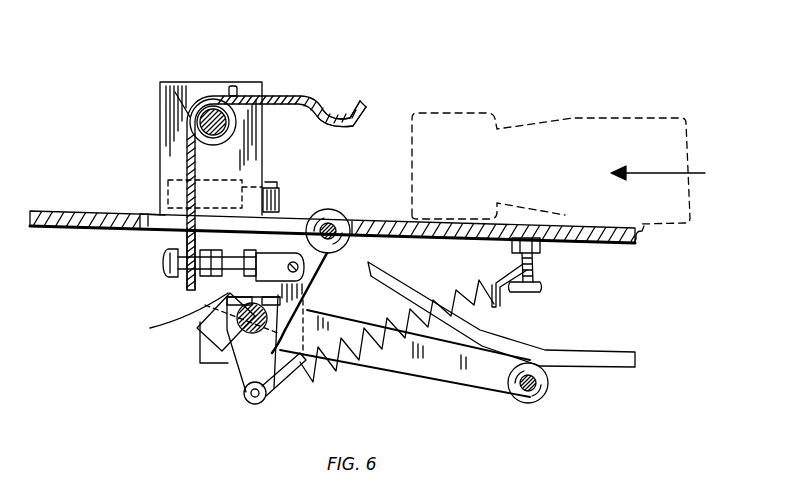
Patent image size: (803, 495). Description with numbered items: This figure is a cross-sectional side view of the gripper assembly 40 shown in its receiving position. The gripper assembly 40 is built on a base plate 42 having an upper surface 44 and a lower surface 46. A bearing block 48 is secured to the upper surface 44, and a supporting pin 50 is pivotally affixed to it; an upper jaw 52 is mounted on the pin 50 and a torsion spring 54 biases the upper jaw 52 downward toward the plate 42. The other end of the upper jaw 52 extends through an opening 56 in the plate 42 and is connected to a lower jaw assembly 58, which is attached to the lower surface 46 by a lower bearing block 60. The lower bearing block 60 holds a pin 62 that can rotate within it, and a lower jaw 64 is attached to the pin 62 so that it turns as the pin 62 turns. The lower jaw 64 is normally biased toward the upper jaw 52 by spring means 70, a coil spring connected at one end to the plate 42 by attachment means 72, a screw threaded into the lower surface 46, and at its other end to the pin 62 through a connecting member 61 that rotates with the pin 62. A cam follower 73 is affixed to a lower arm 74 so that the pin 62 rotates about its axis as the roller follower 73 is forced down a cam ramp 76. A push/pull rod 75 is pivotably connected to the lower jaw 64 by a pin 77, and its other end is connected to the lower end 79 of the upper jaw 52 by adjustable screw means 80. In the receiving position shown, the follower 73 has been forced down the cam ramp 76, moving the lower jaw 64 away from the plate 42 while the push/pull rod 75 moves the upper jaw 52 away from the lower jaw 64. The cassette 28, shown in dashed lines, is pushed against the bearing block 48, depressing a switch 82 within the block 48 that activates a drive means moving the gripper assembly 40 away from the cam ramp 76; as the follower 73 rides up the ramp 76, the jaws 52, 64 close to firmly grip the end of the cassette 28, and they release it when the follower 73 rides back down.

The cassette 28 is at (577, 116).
The gripper assembly 40 is at (172, 128).
The base plate 42 is at (637, 239).
The upper surface 44 is at (334, 222).
The lower surface 46 is at (442, 233).
The bearing block 48 is at (160, 134).
The supporting pin 50 is at (276, 168).
The upper jaw 52 is at (320, 100).
The torsion spring 54 is at (237, 125).
The opening 56 is at (148, 212).
The lower jaw assembly 58 is at (178, 362).
The lower bearing block 60 is at (215, 300).
The connecting member 61 is at (243, 384).
The pin 62 is at (308, 302).
The lower jaw 64 is at (328, 254).
The spring means 70 is at (502, 302).
The attachment means 72 is at (543, 281).
The cam follower 73 is at (550, 384).
The lower arm 74 is at (482, 386).
The push/pull rod 75 is at (166, 265).
The cam ramp 76 is at (408, 288).
The pin 77 is at (291, 228).
The lower end 79 is at (186, 240).
The adjustable screw means 80 is at (205, 298).
The switch 82 is at (278, 184).